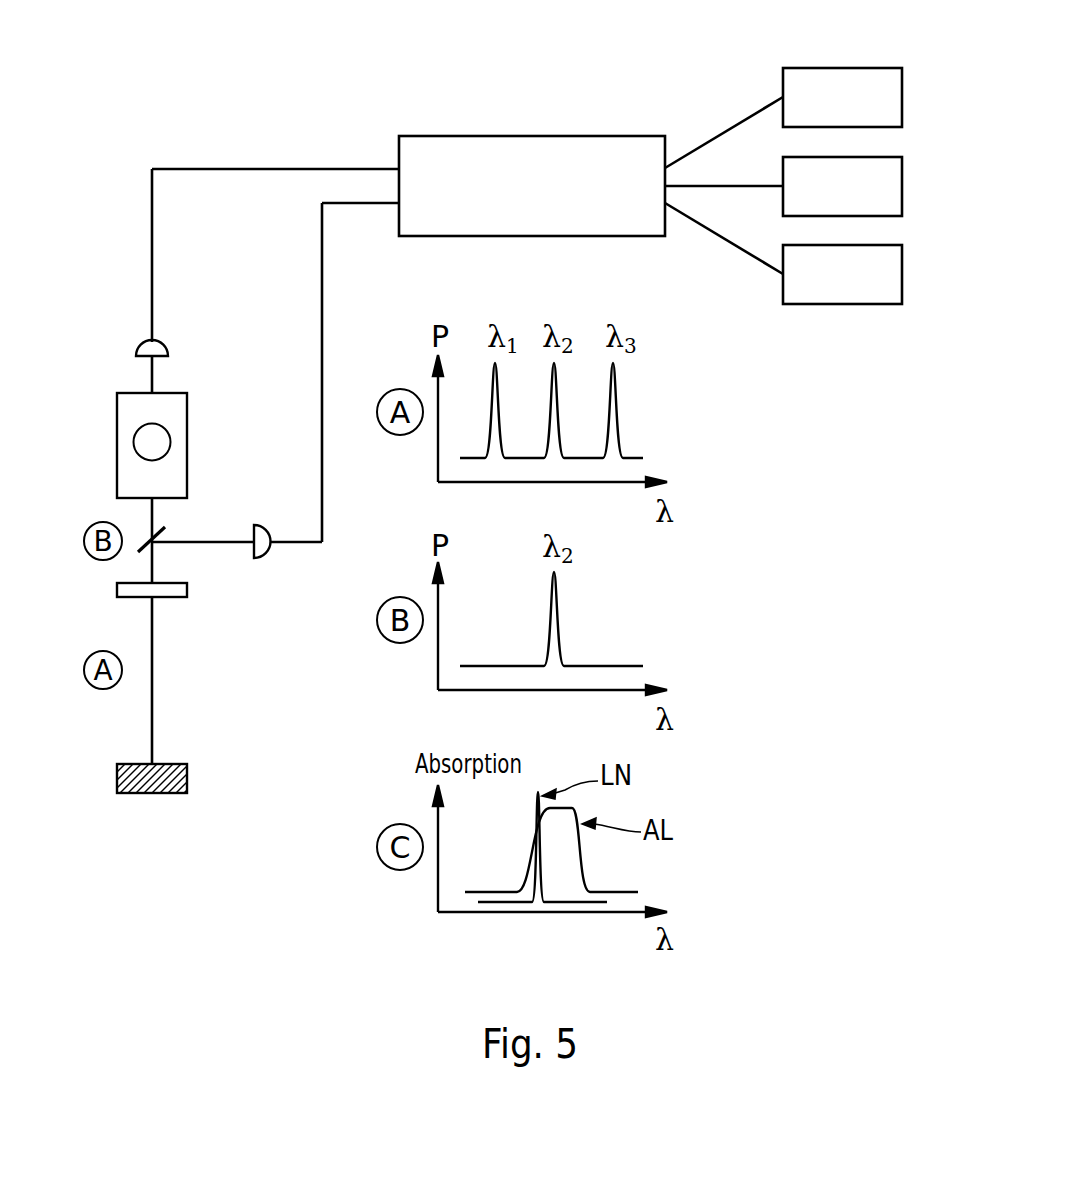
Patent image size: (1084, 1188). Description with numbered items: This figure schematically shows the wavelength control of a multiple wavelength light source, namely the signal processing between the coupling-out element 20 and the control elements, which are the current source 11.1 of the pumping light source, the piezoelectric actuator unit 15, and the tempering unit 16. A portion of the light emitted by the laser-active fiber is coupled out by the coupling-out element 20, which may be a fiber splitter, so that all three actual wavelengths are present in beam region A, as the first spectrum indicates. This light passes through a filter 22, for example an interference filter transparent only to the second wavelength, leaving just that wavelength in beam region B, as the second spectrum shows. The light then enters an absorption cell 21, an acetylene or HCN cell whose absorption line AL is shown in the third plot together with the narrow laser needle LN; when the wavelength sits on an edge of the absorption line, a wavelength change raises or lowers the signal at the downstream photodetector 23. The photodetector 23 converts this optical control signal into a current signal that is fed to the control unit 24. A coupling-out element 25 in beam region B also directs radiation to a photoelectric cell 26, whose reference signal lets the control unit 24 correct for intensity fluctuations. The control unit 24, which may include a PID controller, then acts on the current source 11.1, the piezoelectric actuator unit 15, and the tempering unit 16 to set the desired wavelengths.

The current source 11.1 is at (830, 297).
The piezoelectric actuator unit 15 is at (823, 77).
The tempering unit 16 is at (897, 190).
The coupling-out element 20 is at (118, 785).
The absorption cell 21 is at (125, 421).
The filter 22 is at (118, 590).
The photodetector 23 is at (143, 351).
The control unit 24 is at (490, 143).
The coupling-out element 25 is at (166, 531).
The photoelectric cell 26 is at (259, 555).